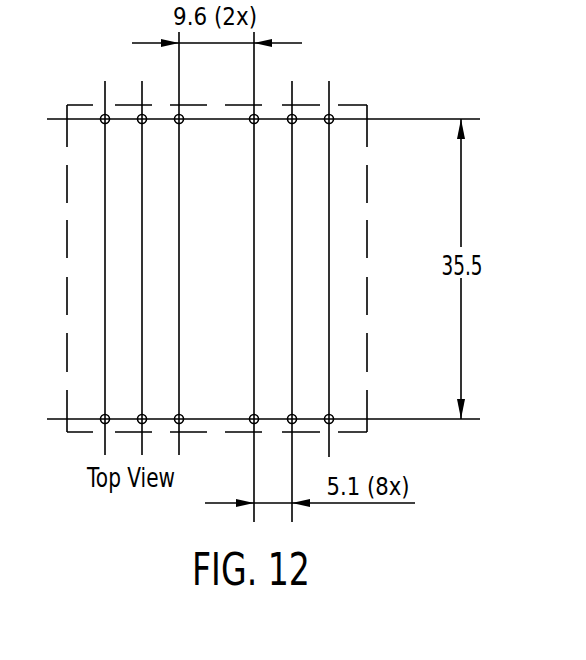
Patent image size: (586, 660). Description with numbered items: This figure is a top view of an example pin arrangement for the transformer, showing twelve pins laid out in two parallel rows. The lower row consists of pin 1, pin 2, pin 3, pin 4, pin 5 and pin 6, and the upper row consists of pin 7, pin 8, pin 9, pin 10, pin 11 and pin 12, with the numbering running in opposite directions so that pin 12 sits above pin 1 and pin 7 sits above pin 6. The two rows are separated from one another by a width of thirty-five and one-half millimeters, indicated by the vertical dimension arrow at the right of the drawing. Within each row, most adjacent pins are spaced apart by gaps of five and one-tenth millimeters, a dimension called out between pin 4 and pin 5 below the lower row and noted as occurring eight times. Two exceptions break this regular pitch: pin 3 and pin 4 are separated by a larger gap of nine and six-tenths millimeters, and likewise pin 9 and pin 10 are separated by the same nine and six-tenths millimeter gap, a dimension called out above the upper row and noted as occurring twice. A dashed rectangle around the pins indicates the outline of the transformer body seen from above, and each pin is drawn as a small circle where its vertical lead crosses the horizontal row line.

The pin 1 is at (98, 362).
The pin 2 is at (134, 362).
The pin 3 is at (173, 362).
The pin 4 is at (247, 396).
The pin 5 is at (285, 396).
The pin 6 is at (322, 363).
The pin 7 is at (323, 175).
The pin 8 is at (286, 175).
The pin 9 is at (248, 151).
The pin 10 is at (168, 151).
The pin 11 is at (132, 175).
The pin 12 is at (94, 175).